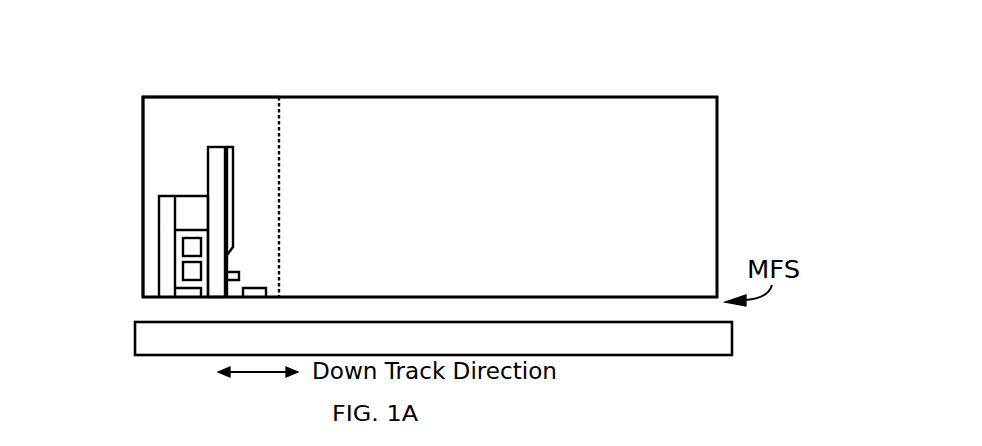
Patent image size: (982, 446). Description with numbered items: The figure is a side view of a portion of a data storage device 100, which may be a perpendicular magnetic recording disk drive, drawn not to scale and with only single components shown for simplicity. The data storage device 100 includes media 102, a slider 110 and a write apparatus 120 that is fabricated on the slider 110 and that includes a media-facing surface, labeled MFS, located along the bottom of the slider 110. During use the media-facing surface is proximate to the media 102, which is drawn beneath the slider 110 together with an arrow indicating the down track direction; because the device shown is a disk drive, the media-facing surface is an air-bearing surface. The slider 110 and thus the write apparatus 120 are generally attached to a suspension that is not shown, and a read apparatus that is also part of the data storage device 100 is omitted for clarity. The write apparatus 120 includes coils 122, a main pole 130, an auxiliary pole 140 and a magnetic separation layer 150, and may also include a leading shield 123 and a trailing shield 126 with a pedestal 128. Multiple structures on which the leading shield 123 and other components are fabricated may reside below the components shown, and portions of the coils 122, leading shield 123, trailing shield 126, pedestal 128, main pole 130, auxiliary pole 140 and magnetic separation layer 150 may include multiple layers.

The data storage device 100 is at (395, 25).
The media 102 is at (135, 353).
The slider 110 is at (717, 163).
The write apparatus 120 is at (280, 147).
The coils 122 is at (183, 271).
The leading shield 123 is at (266, 289).
The trailing shield 126 is at (159, 210).
The pedestal 128 is at (195, 296).
The main pole 130 is at (208, 147).
The auxiliary pole 140 is at (233, 147).
The magnetic separation layer 150 is at (239, 272).